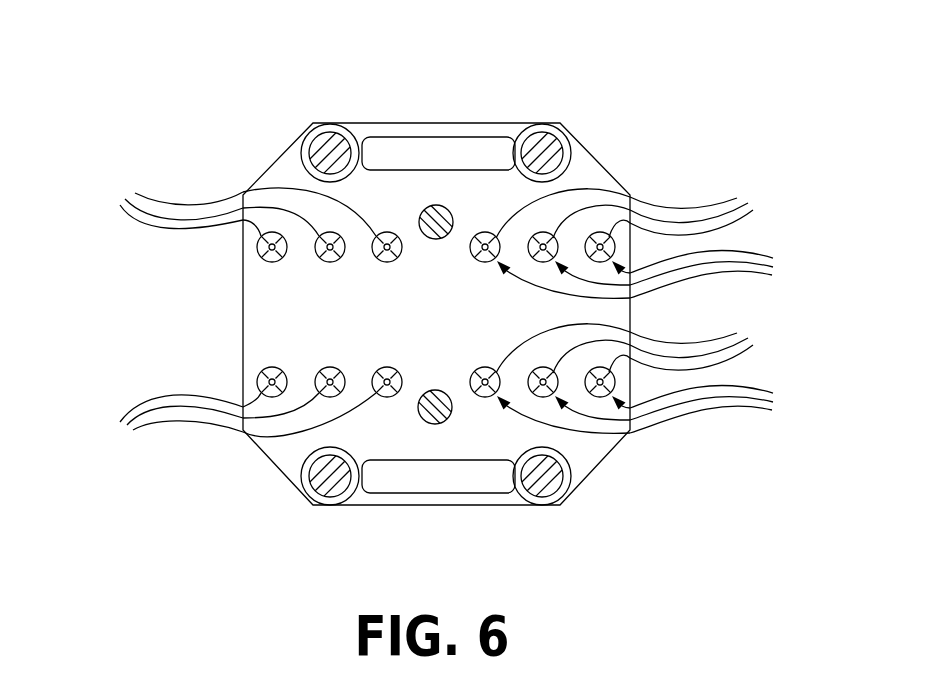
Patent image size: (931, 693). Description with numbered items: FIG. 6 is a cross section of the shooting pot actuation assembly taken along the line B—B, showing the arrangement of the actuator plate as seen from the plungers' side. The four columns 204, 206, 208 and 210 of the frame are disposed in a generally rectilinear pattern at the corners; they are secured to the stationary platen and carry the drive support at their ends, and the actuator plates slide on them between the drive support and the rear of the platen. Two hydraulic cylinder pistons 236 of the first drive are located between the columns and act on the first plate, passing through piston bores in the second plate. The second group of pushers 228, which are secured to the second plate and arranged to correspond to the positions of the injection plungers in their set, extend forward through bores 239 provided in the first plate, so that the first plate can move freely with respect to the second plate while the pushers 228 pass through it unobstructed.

The column 204 is at (331, 150).
The column 206 is at (544, 150).
The column 208 is at (330, 500).
The column 210 is at (540, 500).
The hydraulic cylinder pistons 236 is at (436, 205).
The second group of pushers 228 is at (438, 312).
The bores 239 is at (661, 341).